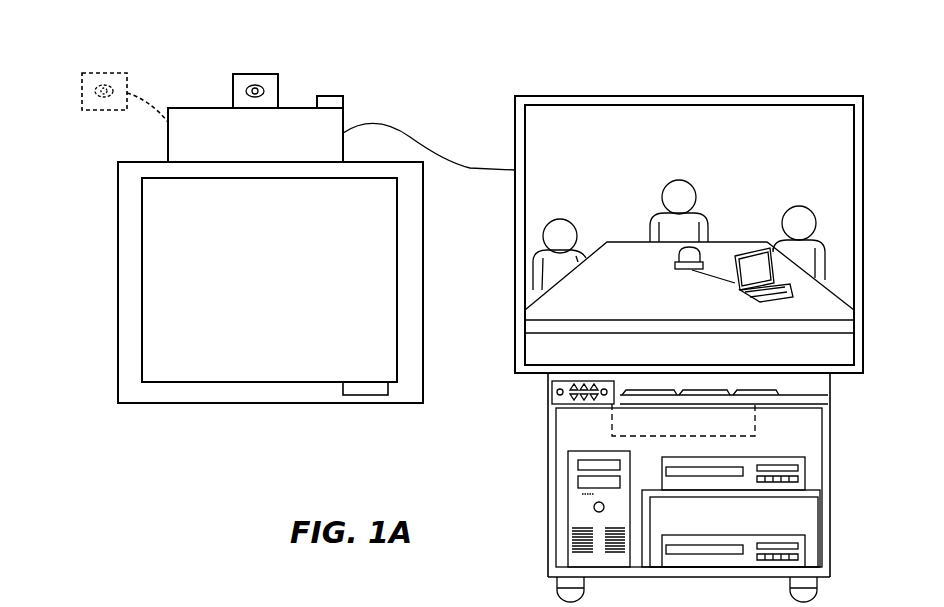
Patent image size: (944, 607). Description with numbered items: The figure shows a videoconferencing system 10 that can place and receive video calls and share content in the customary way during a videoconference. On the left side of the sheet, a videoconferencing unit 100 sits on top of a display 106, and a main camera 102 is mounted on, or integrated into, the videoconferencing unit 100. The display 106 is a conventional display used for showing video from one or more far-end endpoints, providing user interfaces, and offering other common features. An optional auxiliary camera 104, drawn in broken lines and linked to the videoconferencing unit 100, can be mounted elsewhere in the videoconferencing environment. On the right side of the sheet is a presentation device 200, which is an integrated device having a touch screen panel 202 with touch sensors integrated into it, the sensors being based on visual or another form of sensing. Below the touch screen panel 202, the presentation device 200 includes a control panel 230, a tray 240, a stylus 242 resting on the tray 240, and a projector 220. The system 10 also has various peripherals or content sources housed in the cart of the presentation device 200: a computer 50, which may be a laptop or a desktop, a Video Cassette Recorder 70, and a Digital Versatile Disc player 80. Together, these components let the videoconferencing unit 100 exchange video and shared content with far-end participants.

The videoconferencing system 10 is at (162, 26).
The videoconferencing unit 100 is at (166, 143).
The main camera 102 is at (264, 74).
The auxiliary camera 104 is at (104, 73).
The display 106 is at (118, 273).
The presentation device 200 is at (571, 96).
The touch screen panel 202 is at (636, 114).
The projector 220 is at (755, 422).
The control panel 230 is at (552, 392).
The tray 240 is at (828, 396).
The stylus 242 is at (761, 390).
The computer 50 is at (568, 497).
The Video Cassette Recorder (VCR) 70 is at (805, 458).
The Digital Versatile Disc (DVD) player 80 is at (805, 538).